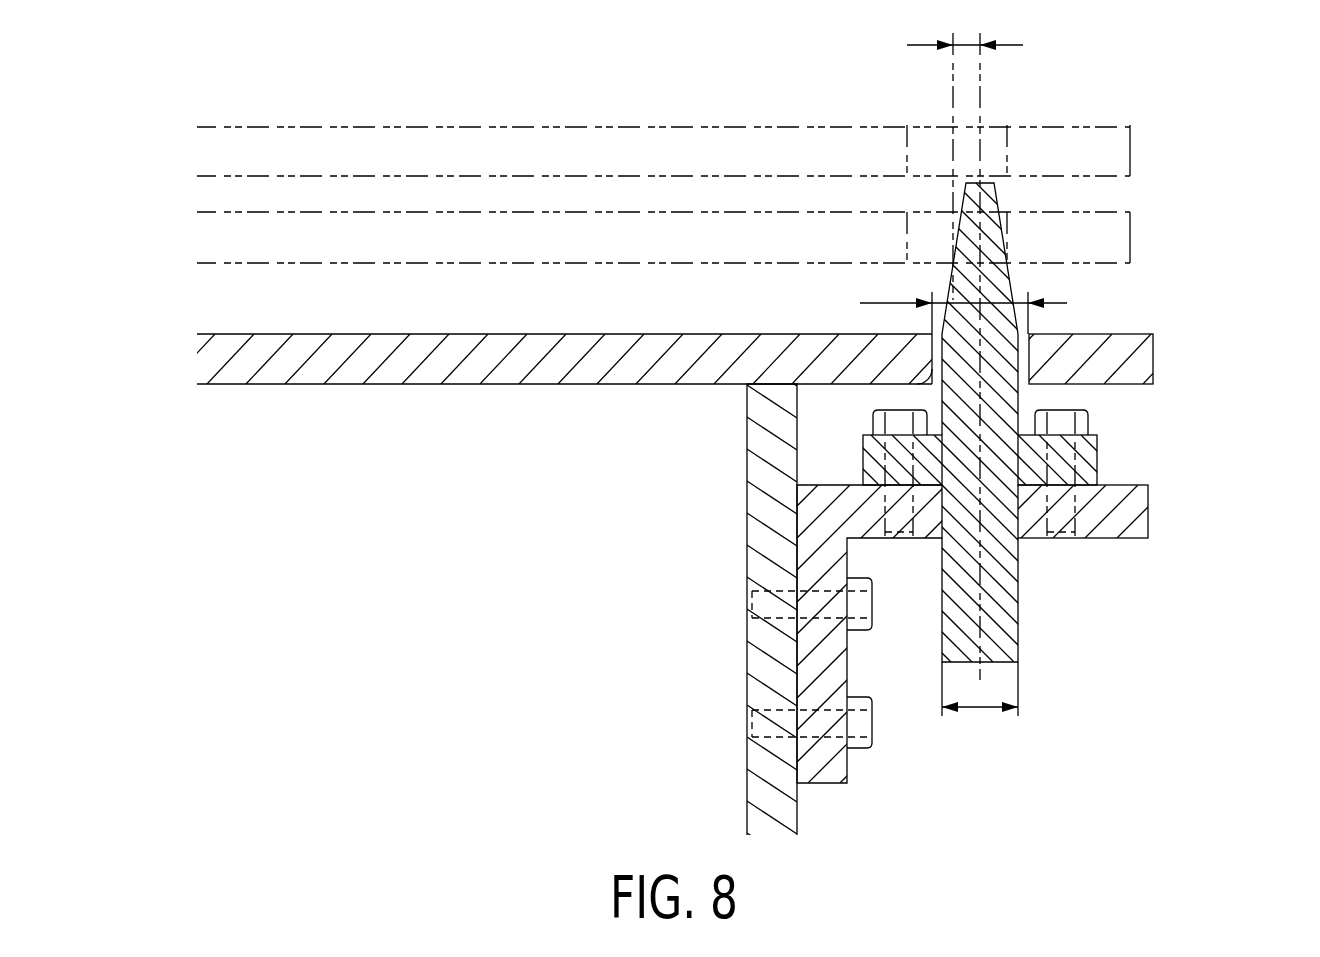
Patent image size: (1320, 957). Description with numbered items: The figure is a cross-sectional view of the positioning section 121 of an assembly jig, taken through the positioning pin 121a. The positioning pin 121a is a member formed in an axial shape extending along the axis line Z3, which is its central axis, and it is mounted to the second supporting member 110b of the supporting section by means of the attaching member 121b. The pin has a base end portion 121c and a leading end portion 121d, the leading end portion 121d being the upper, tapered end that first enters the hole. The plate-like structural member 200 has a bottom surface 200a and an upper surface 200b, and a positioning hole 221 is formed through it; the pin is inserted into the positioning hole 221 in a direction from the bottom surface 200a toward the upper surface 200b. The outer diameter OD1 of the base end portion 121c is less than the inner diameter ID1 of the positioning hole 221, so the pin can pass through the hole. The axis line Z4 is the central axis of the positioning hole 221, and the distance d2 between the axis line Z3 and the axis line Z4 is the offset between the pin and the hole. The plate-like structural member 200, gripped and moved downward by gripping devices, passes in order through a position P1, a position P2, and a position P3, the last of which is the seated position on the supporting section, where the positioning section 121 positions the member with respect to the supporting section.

The plate-like structural member 200 is at (709, 265).
The bottom surface 200a is at (552, 386).
The upper surface 200b is at (507, 334).
The second supporting member 110b is at (746, 497).
The positioning section 121 is at (896, 394).
The positioning pin 121a is at (1036, 600).
The attaching member 121b is at (1150, 515).
The base end portion 121c is at (1020, 364).
The leading end portion 121d is at (994, 197).
The positioning hole 221 is at (928, 378).
The position P1 is at (1148, 150).
The position P2 is at (1148, 238).
The position P3 is at (1171, 360).
The axis line Z3 is at (982, 82).
The axis line Z4 is at (951, 80).
The distance d2 is at (965, 27).
The inner diameter ID1 is at (963, 303).
The outer diameter OD1 is at (980, 704).